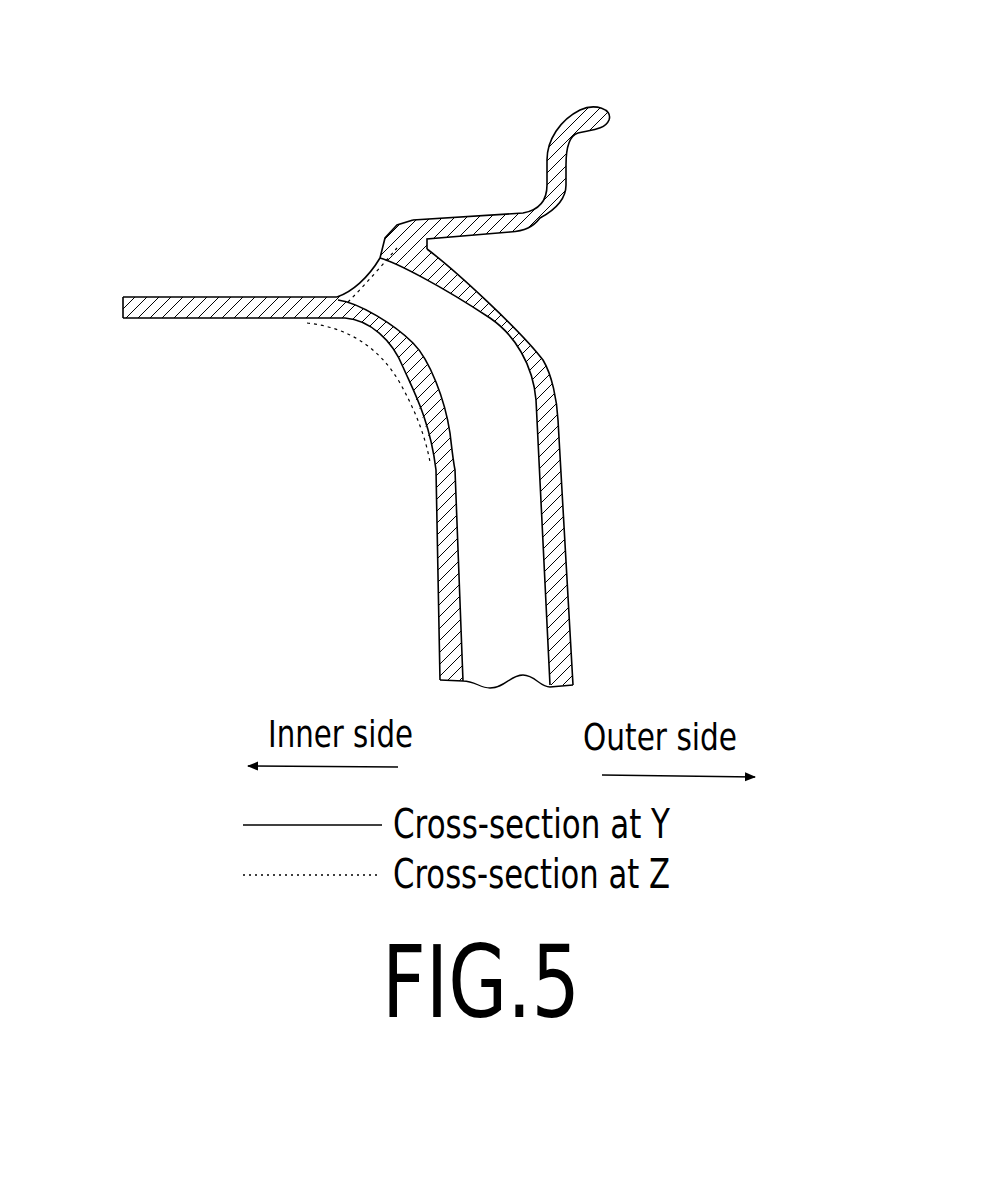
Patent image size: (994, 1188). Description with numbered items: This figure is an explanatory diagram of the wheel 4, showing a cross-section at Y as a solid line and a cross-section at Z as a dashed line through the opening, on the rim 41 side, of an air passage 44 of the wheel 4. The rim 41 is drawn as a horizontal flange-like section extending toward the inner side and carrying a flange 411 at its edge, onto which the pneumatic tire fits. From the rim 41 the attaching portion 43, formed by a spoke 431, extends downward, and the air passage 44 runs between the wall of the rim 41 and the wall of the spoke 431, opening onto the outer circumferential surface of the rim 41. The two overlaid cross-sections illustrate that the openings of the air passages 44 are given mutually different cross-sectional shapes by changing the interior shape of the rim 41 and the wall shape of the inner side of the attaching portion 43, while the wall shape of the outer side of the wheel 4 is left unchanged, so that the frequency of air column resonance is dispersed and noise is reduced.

The wheel 4 is at (551, 77).
The rim 41 is at (235, 298).
The flange 411 is at (590, 107).
The attaching portion 43 is at (523, 467).
The spoke 431 is at (553, 382).
The air passage 44 is at (522, 477).